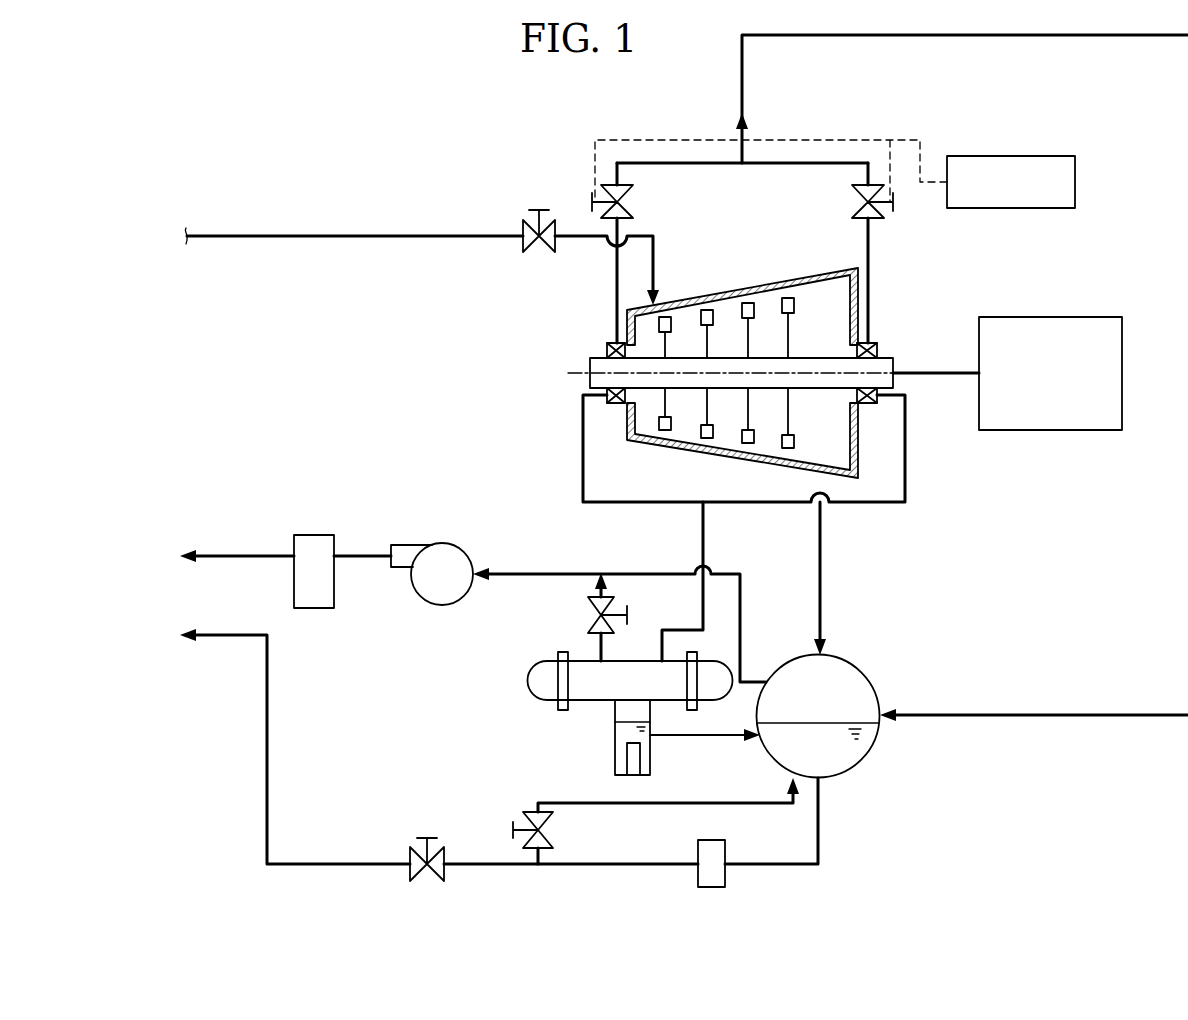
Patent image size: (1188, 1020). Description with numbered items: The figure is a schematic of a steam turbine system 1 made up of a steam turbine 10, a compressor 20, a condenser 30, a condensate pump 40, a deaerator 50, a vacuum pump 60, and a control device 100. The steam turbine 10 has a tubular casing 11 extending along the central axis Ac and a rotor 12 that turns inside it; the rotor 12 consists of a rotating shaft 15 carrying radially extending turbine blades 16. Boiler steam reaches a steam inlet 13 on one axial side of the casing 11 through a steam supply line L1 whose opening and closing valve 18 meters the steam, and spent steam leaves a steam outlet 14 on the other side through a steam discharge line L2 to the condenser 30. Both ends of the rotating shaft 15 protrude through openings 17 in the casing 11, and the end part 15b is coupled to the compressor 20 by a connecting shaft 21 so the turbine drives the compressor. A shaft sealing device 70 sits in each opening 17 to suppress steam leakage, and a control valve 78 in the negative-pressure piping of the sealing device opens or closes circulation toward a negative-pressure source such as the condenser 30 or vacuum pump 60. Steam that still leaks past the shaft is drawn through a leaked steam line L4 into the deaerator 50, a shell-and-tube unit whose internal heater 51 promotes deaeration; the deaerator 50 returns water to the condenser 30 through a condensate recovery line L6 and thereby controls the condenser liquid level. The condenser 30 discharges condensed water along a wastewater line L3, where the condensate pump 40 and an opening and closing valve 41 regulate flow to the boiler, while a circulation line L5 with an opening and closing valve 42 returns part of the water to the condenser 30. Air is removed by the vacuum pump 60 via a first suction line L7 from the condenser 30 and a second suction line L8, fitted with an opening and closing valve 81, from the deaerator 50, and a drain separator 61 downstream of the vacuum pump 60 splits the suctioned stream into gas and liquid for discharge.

The steam turbine system 1 is at (1135, 168).
The steam turbine 10 is at (742, 376).
The casing 11 is at (722, 295).
The rotor 12 is at (822, 342).
The steam inlet 13 is at (660, 300).
The steam outlet 14 is at (828, 480).
The rotating shaft 15 is at (828, 392).
The end part 15b is at (598, 408).
The turbine blades 16 is at (716, 456).
The openings 17 is at (610, 348).
The opening and closing valve 18 is at (526, 212).
The compressor 20 is at (1122, 345).
The connecting shaft 21 is at (945, 380).
The condenser 30 is at (880, 698).
The condensate pump 40 is at (727, 866).
The opening and closing valve 41 is at (448, 860).
The opening and closing valve 42 is at (552, 852).
The deaerator 50 is at (527, 680).
The heater 51 is at (615, 752).
The vacuum pump 60 is at (455, 545).
The drain separator 61 is at (325, 535).
The shaft sealing device 70 is at (590, 366).
The control valve 78 is at (633, 205).
The opening and closing valve 81 is at (615, 601).
The control device 100 is at (1045, 156).
The central axis Ac is at (578, 378).
The steam supply line L1 is at (380, 236).
The steam discharge line L2 is at (822, 575).
The wastewater line L3 is at (650, 867).
The leaked steam line L4 is at (703, 535).
The circulation line L5 is at (607, 800).
The condensate recovery line L6 is at (724, 737).
The first suction line L7 is at (560, 573).
The second suction line L8 is at (598, 640).